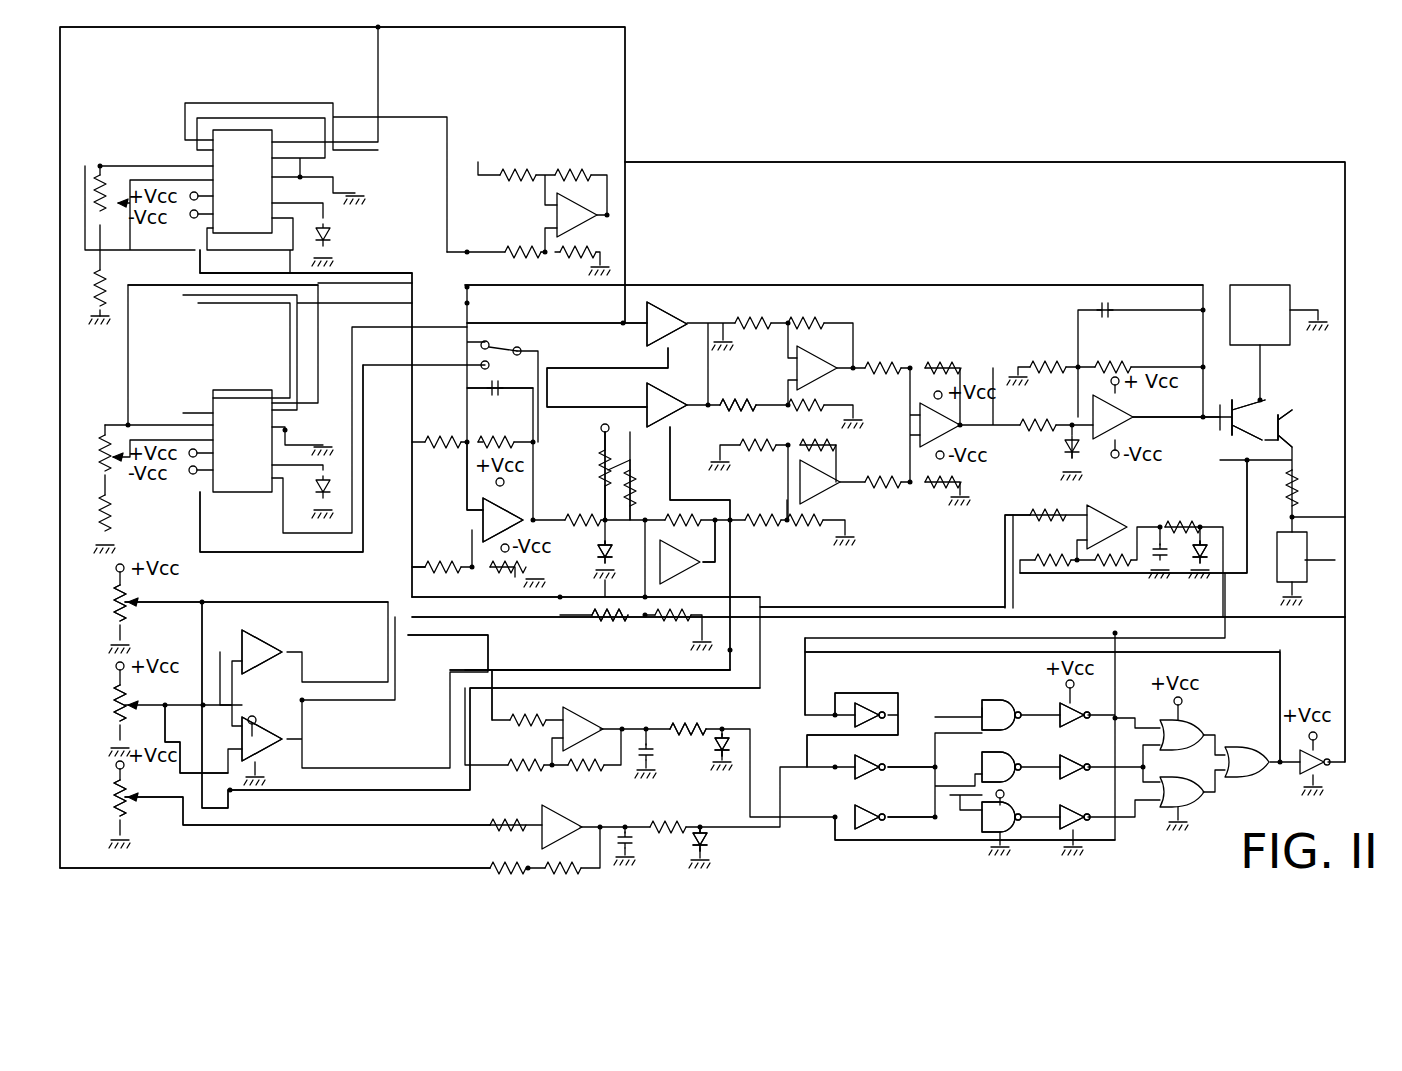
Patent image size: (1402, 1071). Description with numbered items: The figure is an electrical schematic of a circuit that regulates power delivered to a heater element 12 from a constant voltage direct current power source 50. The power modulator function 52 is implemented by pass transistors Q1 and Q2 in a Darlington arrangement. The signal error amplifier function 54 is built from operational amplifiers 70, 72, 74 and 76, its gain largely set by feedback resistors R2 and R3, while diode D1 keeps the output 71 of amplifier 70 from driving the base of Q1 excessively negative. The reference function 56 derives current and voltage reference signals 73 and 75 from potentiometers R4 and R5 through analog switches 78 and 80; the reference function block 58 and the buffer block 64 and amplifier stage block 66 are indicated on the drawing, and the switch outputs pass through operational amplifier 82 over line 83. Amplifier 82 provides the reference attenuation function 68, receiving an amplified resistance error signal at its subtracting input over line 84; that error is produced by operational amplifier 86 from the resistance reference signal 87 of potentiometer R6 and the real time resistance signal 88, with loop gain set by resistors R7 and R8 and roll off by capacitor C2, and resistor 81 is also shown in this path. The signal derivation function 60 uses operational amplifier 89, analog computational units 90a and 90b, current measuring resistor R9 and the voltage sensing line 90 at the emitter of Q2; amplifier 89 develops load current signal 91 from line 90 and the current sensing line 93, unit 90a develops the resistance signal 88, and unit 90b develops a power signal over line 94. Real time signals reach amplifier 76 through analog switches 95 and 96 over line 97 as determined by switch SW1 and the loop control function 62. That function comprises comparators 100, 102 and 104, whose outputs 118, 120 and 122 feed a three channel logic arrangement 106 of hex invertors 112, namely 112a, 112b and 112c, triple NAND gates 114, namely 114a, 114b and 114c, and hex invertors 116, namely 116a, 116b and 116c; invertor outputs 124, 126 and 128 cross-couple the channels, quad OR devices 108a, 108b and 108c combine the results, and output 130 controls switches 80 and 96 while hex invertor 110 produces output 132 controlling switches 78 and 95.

The heater element 12 is at (1307, 560).
The power source 50 is at (1272, 285).
The power modulator function 52 is at (1300, 395).
The signal error amplifier function 54 is at (953, 352).
The reference function 56 is at (103, 620).
The amplifier stage 58 is at (272, 625).
The signal derivation function 60 is at (128, 345).
The loop control function 62 is at (905, 596).
The buffer amplifiers 64 is at (638, 353).
The amplifier stage 66 is at (455, 480).
The reference attenuation function 68 is at (630, 572).
The operational amplifier 70 is at (1090, 400).
The output of operational amplifier 70 71 is at (1180, 420).
The operational amplifier 72 is at (920, 427).
The current reference signal 73 is at (220, 690).
The operational amplifier 74 is at (831, 490).
The voltage reference signal 75 is at (1010, 515).
The operational amplifier 76 is at (826, 390).
The current reference analog switch 78 is at (268, 645).
The voltage reference analog switch 80 is at (266, 729).
The resistor 81 is at (562, 618).
The operational amplifier 82 is at (683, 558).
The line 83 is at (720, 550).
The line 84 is at (625, 560).
The operational amplifier 86 is at (523, 508).
The resistance reference signal 87 is at (358, 600).
The real time resistance signal 88 is at (293, 274).
The operational amplifier 89 is at (552, 215).
The real time voltage sensing line 90 is at (258, 85).
The real time analog computational unit 90a is at (242, 181).
The real time analog computational unit 90b is at (242, 441).
The real time load current signal 91 is at (185, 30).
The line 93 is at (807, 162).
The line 94 is at (270, 553).
The analog switch 95 is at (668, 320).
The analog switch 96 is at (680, 392).
The line 97 is at (727, 405).
The operational amplifier 100 is at (1098, 511).
The operational amplifier 102 is at (548, 817).
The operational amplifier 104 is at (575, 720).
The three channel logic arrangement 106 is at (850, 845).
The quad OR device 108a is at (1182, 725).
The quad OR device 108b is at (1190, 810).
The quad OR device 108c is at (1250, 752).
The hex invertor 110 is at (1318, 775).
The hex invertor 112 is at (825, 848).
The hex invertor 112a is at (838, 735).
The hex invertor 112b is at (876, 765).
The hex invertor 112c is at (860, 812).
The triple NAND gate 114 is at (980, 850).
The triple NAND gate 114a is at (1003, 703).
The triple NAND gate 114b is at (1004, 769).
The triple NAND gate 114c is at (1004, 815).
The hex invertor 116 is at (1055, 845).
The hex invertor 116a is at (1054, 702).
The hex invertor 116b is at (1078, 769).
The hex invertor 116c is at (1058, 812).
The output of operational amplifier 100 118 is at (1230, 535).
The output of operational amplifier 102 120 is at (728, 835).
The output of operational amplifier 104 122 is at (675, 735).
The output of hex invertor 112a 124 is at (920, 685).
The output of hex invertor 112b 126 is at (933, 785).
The output of hex invertor 112c 128 is at (936, 837).
The output of quad OR device 108c 130 is at (670, 450).
The output of hex invertor 110 132 is at (560, 368).
The resistor R2 is at (1113, 354).
The resistor R3 is at (1048, 354).
The potentiometer R4 is at (99, 703).
The potentiometer R5 is at (99, 798).
The potentiometer R6 is at (99, 603).
The resistor R7 is at (439, 432).
The resistor R8 is at (496, 432).
The current measuring resistor R9 is at (1309, 488).
The capacitor C2 is at (500, 375).
The diode D1 is at (1054, 450).
The pass transistor Q1 is at (1248, 420).
The pass transistor Q2 is at (1295, 428).
The switch SW1 is at (515, 346).